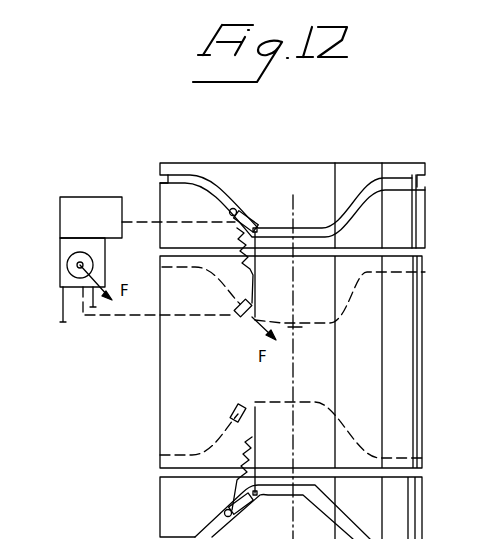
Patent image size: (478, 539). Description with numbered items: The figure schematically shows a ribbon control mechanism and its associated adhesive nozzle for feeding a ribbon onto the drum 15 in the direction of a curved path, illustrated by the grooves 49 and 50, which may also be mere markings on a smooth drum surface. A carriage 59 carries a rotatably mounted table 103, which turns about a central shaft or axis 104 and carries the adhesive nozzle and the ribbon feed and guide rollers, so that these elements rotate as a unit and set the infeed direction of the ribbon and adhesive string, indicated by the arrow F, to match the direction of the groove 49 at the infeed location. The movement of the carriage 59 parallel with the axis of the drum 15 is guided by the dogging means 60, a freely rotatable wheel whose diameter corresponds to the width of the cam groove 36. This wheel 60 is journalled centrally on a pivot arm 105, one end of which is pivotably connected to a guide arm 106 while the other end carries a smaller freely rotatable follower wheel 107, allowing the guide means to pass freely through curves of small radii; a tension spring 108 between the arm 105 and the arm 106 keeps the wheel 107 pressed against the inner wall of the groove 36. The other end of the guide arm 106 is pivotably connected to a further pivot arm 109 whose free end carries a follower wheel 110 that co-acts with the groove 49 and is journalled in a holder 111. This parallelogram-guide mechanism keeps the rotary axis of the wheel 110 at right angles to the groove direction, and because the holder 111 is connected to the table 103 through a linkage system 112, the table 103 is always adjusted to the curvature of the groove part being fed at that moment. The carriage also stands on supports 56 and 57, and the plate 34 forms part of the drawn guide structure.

The drum 15 is at (160, 395).
The upper guide plate 34 is at (240, 168).
The cam groove 36 is at (358, 200).
The groove 49 is at (343, 307).
The groove 50 is at (340, 420).
The support leg 56 is at (93, 308).
The support leg 57 is at (62, 306).
The carriage 59 is at (62, 243).
The dogging means 60 is at (250, 217).
The table 103 is at (77, 263).
The central shaft or axis 104 is at (73, 269).
The pivot arm 105 is at (258, 224).
The guide arm 106 is at (256, 272).
The follower wheel 107 is at (233, 209).
The tension spring 108 is at (232, 235).
The further pivot arm 109 is at (244, 326).
The follower wheel 110 is at (235, 308).
The holder 111 is at (241, 318).
The linkage system 112 is at (142, 316).